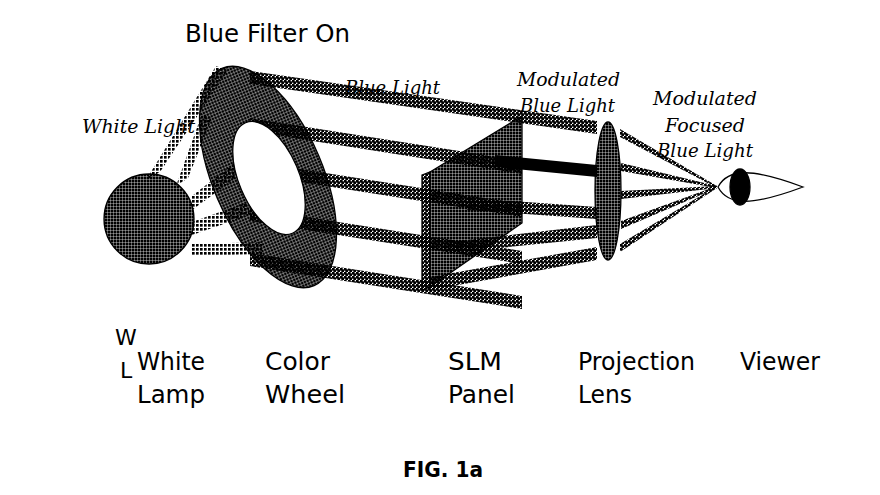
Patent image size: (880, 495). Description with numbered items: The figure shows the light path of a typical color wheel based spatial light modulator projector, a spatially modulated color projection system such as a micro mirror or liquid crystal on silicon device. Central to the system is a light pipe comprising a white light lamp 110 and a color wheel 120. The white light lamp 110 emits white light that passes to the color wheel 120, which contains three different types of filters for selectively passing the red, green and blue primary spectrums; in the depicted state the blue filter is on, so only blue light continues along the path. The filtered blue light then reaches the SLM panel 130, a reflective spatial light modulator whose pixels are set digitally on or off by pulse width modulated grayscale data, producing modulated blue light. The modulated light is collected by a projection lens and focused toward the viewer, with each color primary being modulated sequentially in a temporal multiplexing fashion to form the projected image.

The white light lamp 110 is at (132, 240).
The color wheel 120 is at (285, 273).
The SLM panel 130 is at (438, 290).